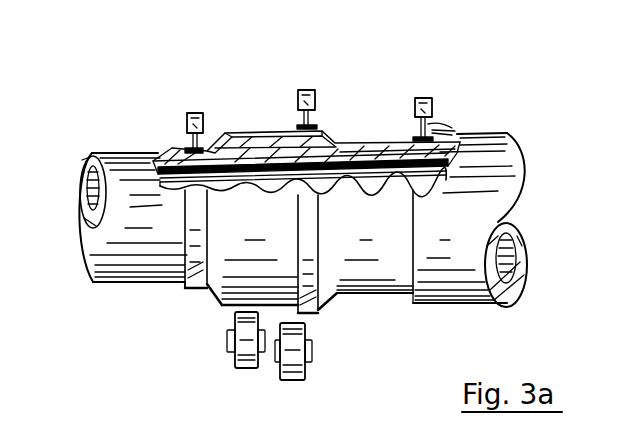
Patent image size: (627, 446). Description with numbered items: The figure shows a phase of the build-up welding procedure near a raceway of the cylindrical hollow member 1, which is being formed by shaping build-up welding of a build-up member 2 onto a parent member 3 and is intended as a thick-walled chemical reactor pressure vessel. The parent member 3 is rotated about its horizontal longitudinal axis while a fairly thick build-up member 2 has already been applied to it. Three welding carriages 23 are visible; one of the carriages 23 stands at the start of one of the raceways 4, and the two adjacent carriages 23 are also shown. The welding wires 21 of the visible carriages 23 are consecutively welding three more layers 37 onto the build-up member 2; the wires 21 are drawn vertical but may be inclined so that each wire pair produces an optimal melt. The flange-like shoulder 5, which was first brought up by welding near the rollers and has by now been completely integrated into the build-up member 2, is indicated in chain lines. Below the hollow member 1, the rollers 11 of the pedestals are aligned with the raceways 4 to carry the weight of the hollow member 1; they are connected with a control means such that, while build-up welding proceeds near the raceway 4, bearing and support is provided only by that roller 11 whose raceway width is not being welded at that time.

The hollow member 1 is at (535, 161).
The build-up member 2 is at (165, 165).
The parent member 3 is at (178, 163).
The raceway 4 is at (238, 137).
The flange-like shoulder 5 is at (253, 194).
The roller 11 is at (287, 369).
The welding wire 21 is at (428, 124).
The welding carriage 23 is at (423, 98).
The layer 37 is at (415, 142).